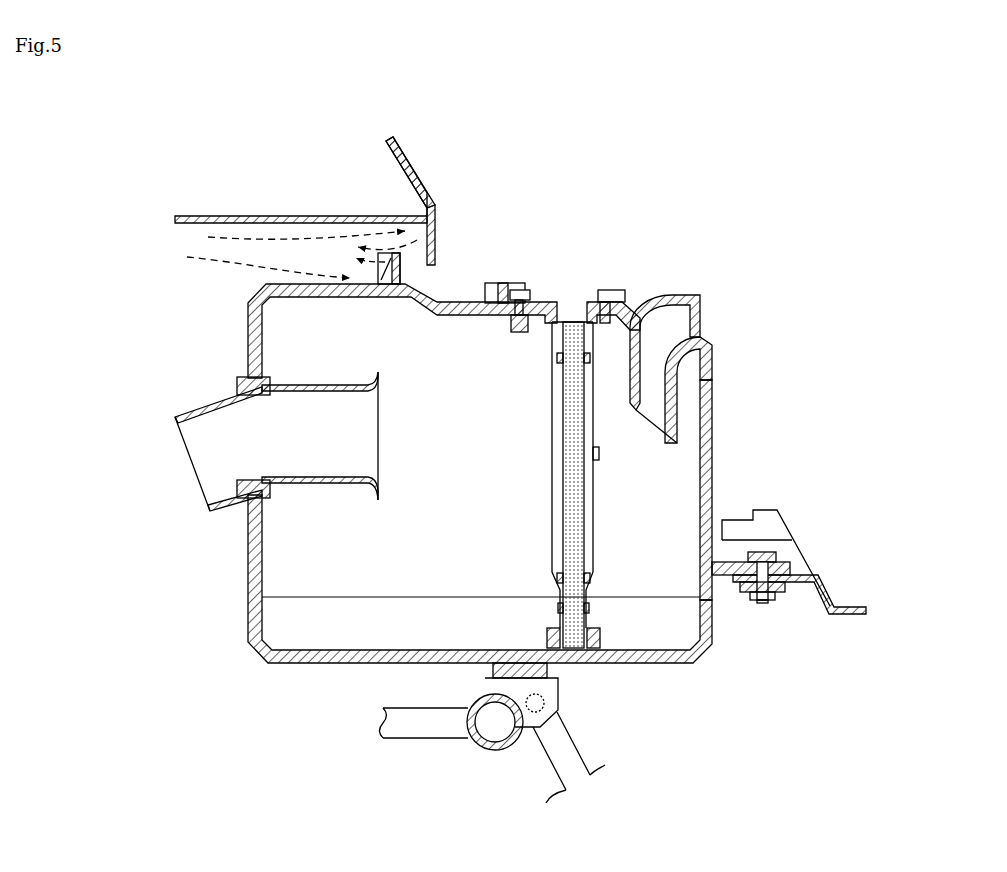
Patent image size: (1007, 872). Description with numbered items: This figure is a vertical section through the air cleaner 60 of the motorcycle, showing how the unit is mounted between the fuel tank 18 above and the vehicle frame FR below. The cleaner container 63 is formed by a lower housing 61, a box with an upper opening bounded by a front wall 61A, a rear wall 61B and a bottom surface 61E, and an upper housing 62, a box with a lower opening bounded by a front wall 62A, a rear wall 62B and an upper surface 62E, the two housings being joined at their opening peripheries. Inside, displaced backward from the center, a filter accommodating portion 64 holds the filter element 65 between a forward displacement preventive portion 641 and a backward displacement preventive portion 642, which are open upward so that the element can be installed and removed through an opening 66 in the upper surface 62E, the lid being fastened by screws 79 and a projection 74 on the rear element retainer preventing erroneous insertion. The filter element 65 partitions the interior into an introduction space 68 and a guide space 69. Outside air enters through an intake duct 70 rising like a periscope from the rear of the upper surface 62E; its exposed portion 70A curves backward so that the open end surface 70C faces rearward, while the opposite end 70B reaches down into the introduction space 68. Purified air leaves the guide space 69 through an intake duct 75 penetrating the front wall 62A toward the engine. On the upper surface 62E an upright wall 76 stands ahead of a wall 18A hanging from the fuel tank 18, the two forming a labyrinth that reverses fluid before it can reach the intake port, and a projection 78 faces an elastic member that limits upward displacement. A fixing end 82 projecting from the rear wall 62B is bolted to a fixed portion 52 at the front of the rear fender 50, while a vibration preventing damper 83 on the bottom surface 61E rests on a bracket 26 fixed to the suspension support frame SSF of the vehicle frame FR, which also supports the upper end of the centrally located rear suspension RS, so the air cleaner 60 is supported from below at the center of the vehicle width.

The fuel tank 18 is at (420, 188).
The wall 18A is at (433, 240).
The bracket 26 is at (553, 695).
The rear fender 50 is at (864, 610).
The fixed portion 52 is at (779, 585).
The air cleaner 60 is at (462, 474).
The lower housing 61 is at (438, 607).
The front wall 61A is at (228, 634).
The rear wall 61B is at (716, 620).
The bottom surface 61E is at (326, 670).
The upper housing 62 is at (486, 415).
The front wall 62A is at (238, 325).
The rear wall 62B is at (718, 478).
The upper surface 62E is at (654, 288).
The cleaner container 63 is at (462, 474).
The filter accommodating portion 64 is at (528, 617).
The filter element 65 is at (575, 522).
The opening 66 is at (604, 466).
The introduction space 68 is at (653, 612).
The guide space 69 is at (296, 626).
The intake duct 70 is at (708, 338).
The exposed portion 70A is at (705, 298).
The end 70B is at (668, 435).
The open end surface 70C is at (702, 322).
The projection 74 is at (600, 458).
The intake duct 75 is at (207, 406).
The upright wall 76 is at (402, 284).
The projection 78 is at (520, 287).
The screw 79 is at (618, 295).
The fixing end 82 is at (788, 565).
The damper 83 is at (548, 674).
The forward displacement preventive portion 641 is at (548, 642).
The backward displacement preventive portion 642 is at (605, 652).
The vehicle frame FR is at (430, 738).
The suspension support frame SSF is at (485, 749).
The rear suspension RS is at (555, 747).